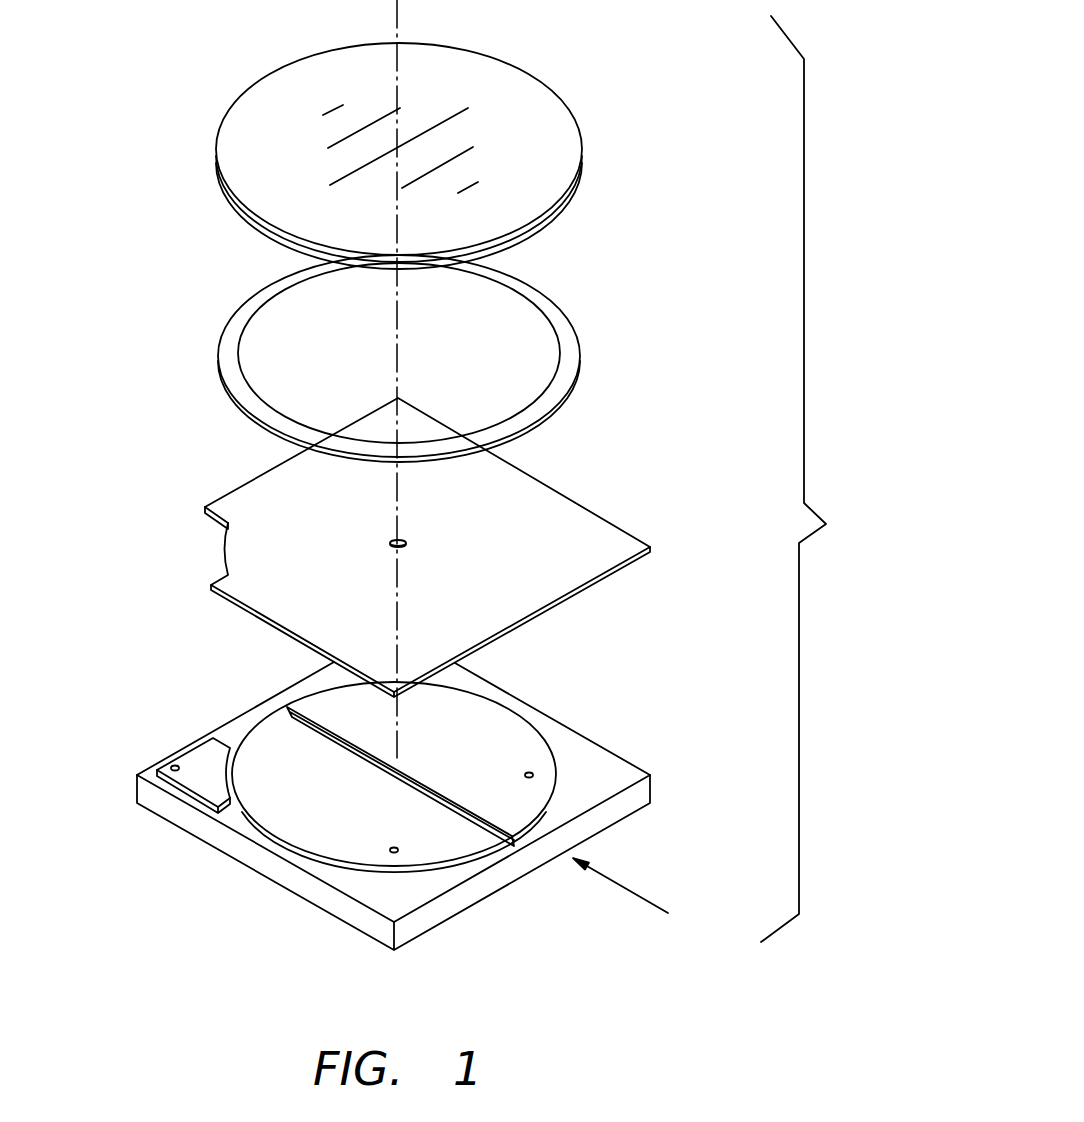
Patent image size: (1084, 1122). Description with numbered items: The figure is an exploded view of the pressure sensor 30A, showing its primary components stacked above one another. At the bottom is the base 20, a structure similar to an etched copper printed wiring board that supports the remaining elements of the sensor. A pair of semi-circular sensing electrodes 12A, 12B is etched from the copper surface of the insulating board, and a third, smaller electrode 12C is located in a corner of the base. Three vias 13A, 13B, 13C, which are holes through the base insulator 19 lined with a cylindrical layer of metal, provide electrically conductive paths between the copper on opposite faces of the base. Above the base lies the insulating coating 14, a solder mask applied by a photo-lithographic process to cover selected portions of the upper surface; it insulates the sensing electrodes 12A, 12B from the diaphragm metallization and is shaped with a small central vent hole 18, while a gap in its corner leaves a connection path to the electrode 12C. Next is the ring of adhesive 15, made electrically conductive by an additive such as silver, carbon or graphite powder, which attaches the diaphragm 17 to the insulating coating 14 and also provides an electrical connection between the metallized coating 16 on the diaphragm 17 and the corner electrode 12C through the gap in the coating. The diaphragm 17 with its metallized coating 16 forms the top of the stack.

The diaphragm 17 is at (538, 152).
The metallized coating 16 is at (565, 213).
The adhesive 15 is at (228, 358).
The insulating coating 14 is at (520, 508).
The central vent hole 18 is at (398, 550).
The base insulator 19 is at (390, 895).
The sensing electrode 12A is at (497, 722).
The sensing electrode 12B is at (323, 840).
The third electrode 12C is at (207, 762).
The via 13A is at (532, 773).
The via 13B is at (397, 848).
The via 13C is at (174, 766).
The base 20 is at (647, 904).
The pressure sensor 30A is at (845, 479).